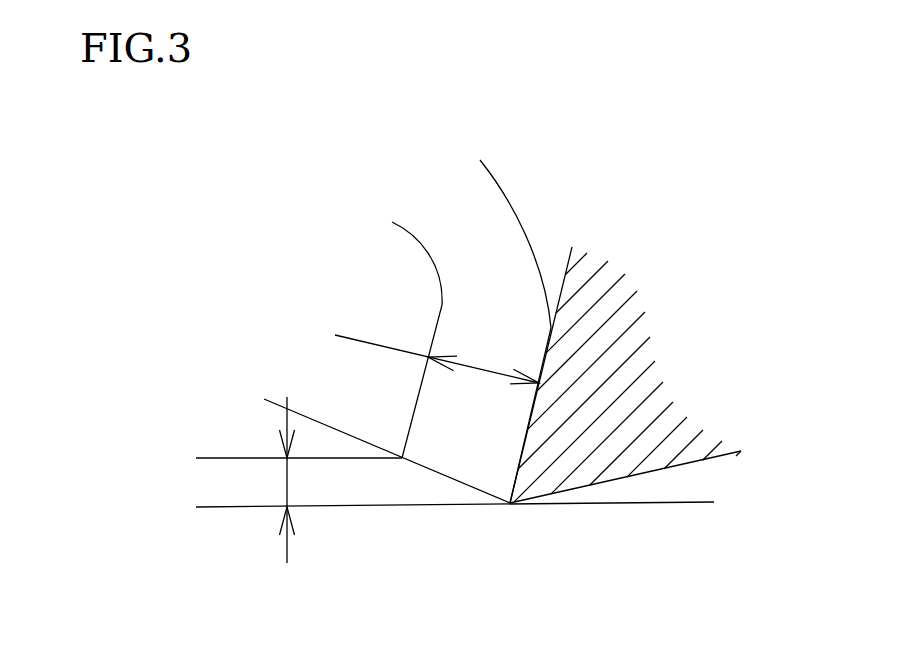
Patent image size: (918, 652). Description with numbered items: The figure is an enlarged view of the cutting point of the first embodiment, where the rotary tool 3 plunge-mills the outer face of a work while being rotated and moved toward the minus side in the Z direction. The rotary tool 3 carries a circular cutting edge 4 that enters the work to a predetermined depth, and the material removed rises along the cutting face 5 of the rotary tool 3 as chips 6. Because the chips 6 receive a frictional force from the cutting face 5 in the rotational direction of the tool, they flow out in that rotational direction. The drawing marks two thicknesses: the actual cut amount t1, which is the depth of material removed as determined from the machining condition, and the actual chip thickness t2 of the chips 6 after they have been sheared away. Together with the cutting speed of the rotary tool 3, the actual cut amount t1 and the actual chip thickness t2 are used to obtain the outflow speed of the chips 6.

The rotary tool 3 is at (636, 343).
The circular cutting edge 4 is at (510, 503).
The cutting face 5 is at (563, 292).
The chips 6 is at (506, 268).
The actual cut amount t1 is at (271, 480).
The actual chip thickness t2 is at (437, 345).